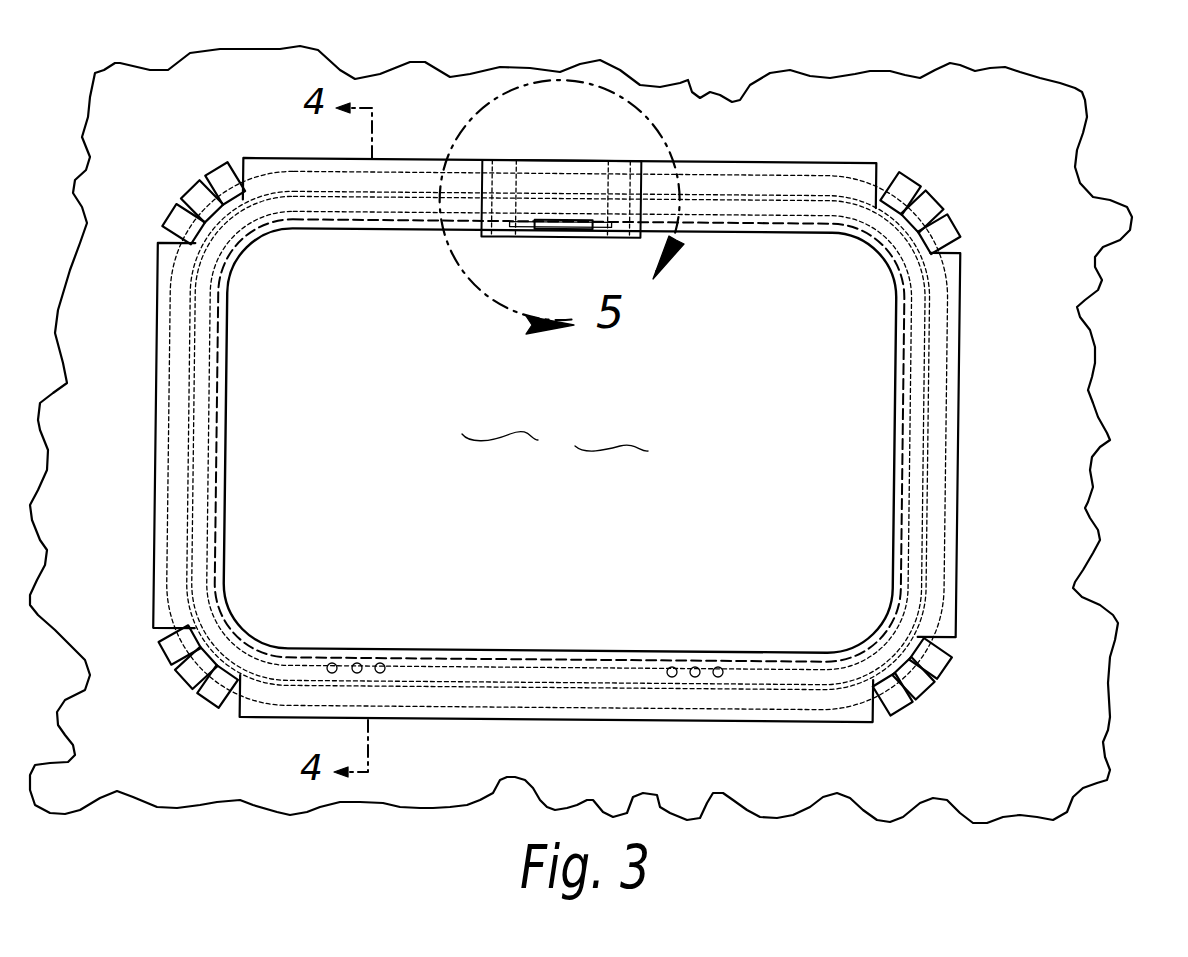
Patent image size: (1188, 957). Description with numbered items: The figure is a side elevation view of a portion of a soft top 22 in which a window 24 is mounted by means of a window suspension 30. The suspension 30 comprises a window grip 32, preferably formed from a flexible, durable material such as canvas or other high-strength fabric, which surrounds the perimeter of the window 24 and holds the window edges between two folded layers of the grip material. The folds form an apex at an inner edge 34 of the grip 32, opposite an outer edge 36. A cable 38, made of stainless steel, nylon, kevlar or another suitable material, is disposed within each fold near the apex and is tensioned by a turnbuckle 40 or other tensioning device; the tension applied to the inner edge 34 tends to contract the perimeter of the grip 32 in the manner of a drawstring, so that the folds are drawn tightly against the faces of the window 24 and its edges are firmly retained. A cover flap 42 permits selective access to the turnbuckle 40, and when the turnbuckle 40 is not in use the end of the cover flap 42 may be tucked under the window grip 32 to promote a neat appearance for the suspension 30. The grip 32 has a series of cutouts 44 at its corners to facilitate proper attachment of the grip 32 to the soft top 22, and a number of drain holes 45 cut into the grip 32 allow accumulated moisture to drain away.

The soft top 22 is at (1017, 133).
The window 24 is at (555, 444).
The window suspension 30 is at (985, 398).
The window grip 32 is at (590, 695).
The inner edge 34 is at (558, 647).
The outer edge 36 is at (497, 678).
The cable 38 is at (733, 665).
The turnbuckle 40 is at (555, 229).
The cover flap 42 is at (640, 183).
The cutouts 44 is at (978, 250).
The drain holes 45 is at (357, 663).